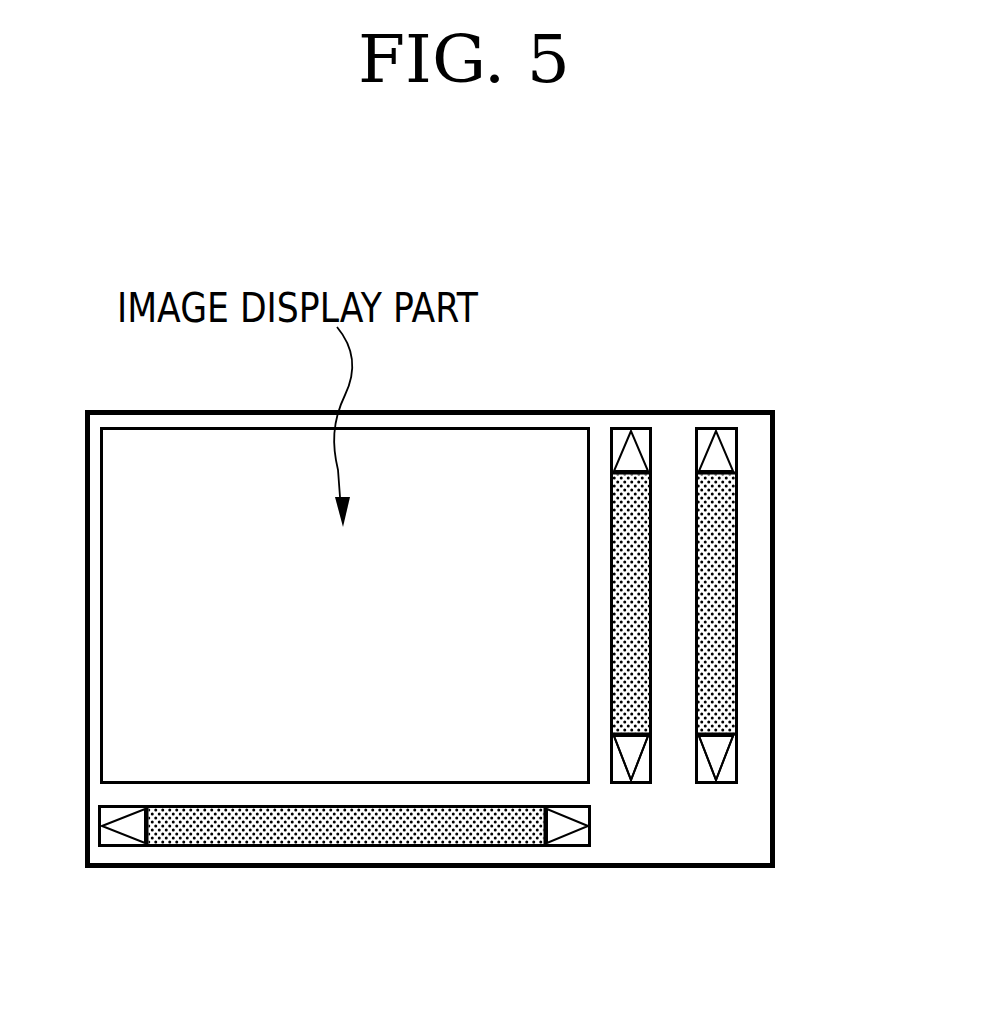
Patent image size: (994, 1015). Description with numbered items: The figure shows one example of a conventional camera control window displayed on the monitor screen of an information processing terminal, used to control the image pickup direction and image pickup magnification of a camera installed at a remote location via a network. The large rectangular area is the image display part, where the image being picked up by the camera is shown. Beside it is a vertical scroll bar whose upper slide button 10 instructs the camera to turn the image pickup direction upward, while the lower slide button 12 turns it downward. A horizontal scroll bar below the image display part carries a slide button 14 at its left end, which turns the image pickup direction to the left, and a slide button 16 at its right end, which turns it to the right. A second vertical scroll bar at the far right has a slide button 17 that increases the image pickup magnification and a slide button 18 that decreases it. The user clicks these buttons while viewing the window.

The slide button 10 is at (632, 454).
The slide button 12 is at (632, 755).
The slide button 14 is at (130, 828).
The slide button 16 is at (558, 828).
The slide button 17 is at (716, 459).
The slide button 18 is at (717, 758).